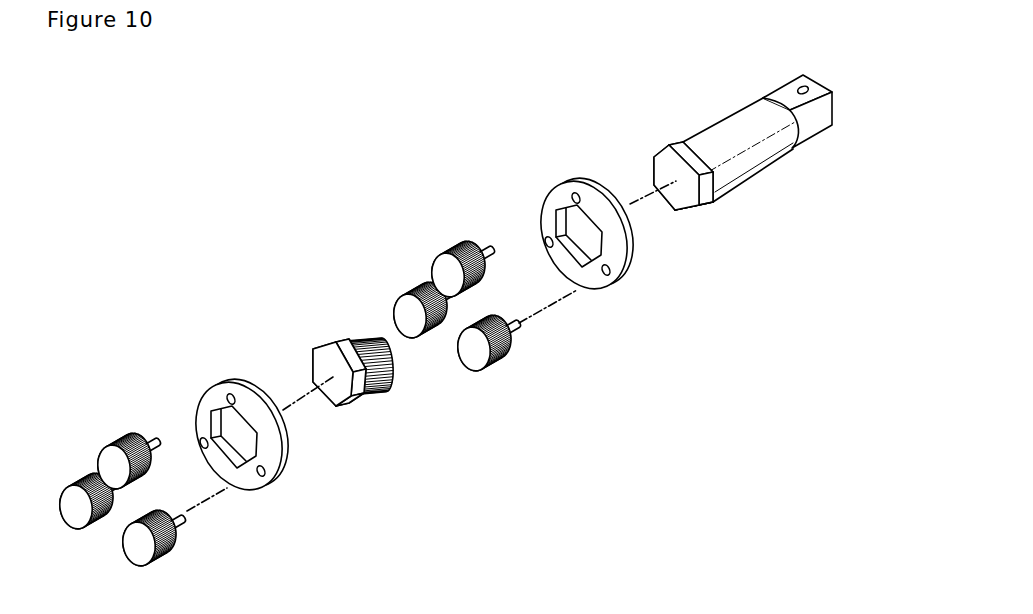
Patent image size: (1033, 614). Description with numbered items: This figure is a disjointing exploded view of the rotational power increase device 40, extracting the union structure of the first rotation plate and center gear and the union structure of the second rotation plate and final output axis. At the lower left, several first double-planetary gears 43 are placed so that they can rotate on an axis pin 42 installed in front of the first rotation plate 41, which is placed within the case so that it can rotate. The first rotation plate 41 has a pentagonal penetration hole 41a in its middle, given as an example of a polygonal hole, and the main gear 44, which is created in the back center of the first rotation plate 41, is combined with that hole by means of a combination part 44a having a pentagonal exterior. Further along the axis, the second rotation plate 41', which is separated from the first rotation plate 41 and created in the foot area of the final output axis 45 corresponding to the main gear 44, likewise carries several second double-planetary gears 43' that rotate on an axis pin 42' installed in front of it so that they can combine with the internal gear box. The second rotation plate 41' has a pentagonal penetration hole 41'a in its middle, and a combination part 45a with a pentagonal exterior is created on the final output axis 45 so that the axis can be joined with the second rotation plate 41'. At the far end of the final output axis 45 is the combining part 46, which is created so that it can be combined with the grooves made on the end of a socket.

The rotational power increase device 40 is at (850, 242).
The first rotation plate 41 is at (248, 456).
The pentagonal penetration hole 41a is at (228, 412).
The axis pin 42 is at (168, 555).
The first double-planetary gears 43 is at (108, 458).
The main gear 44 is at (361, 336).
The combination part 44a is at (359, 400).
The second double-planetary gears 43' is at (442, 265).
The axis pin 42' is at (504, 360).
The second rotation plate 41' is at (599, 253).
The pentagonal penetration hole 41'a is at (547, 190).
The final output axis 45 is at (718, 132).
The combination part 45a is at (703, 203).
The combining part 46 is at (814, 128).